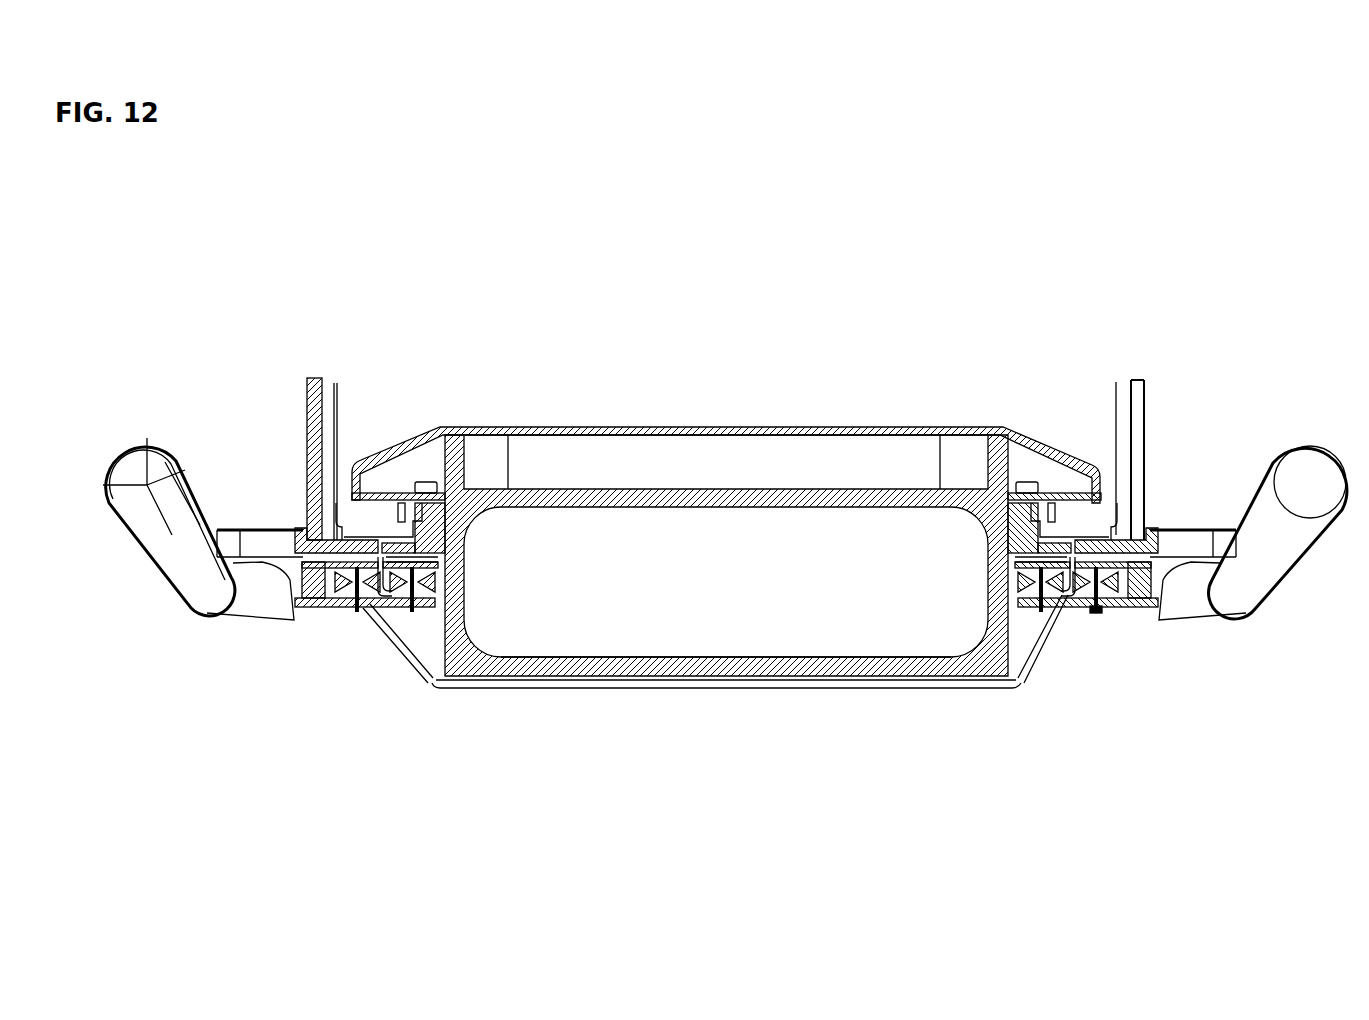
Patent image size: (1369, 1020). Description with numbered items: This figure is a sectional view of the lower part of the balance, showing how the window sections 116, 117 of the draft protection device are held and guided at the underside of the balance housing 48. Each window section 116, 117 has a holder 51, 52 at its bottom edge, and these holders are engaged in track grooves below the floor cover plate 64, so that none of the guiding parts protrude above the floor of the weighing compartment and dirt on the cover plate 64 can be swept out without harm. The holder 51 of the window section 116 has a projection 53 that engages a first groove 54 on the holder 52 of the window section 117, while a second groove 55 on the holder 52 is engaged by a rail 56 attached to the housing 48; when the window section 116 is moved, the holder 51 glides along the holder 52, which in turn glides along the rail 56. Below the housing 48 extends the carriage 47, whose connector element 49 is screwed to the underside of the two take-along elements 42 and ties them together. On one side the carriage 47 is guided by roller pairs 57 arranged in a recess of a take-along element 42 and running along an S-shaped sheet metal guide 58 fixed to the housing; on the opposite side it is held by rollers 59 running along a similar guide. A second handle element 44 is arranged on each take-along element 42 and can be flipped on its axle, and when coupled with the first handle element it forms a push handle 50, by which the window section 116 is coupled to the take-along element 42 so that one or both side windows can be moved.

The take-along element 42 is at (1160, 600).
The second handle element 44 is at (1311, 462).
The carriage 47 is at (977, 716).
The balance housing 48 is at (665, 674).
The connector element 49 is at (892, 686).
The push handle 50 is at (120, 467).
The holder 51 is at (1125, 543).
The holder 52 is at (1078, 522).
The projection 53 is at (1121, 609).
The first groove 54 is at (1151, 612).
The second groove 55 is at (1057, 510).
The rail 56 is at (1037, 497).
The roller pairs 57 is at (387, 607).
The S-shaped sheet metal guide 58 is at (1068, 594).
The rollers 59 is at (1092, 609).
The floor cover plate 64 is at (706, 426).
The window section 116 is at (1143, 388).
The window section 117 is at (1117, 394).